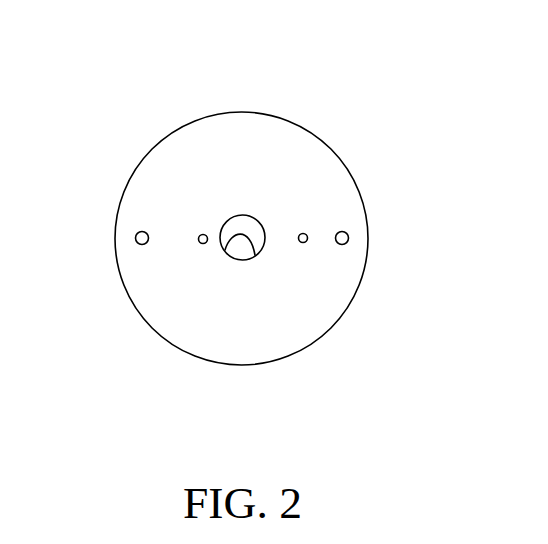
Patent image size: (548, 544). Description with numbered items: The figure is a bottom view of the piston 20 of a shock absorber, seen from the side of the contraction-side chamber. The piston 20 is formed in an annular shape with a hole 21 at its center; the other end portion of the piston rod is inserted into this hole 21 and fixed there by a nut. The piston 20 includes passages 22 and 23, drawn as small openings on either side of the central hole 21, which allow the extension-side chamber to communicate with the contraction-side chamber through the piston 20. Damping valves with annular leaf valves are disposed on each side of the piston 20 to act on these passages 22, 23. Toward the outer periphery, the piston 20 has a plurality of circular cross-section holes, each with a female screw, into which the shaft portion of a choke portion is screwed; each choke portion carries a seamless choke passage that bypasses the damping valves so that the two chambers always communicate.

The piston 20 is at (193, 135).
The hole 21 is at (225, 250).
The passage 22 is at (298, 234).
The passage 23 is at (197, 235).